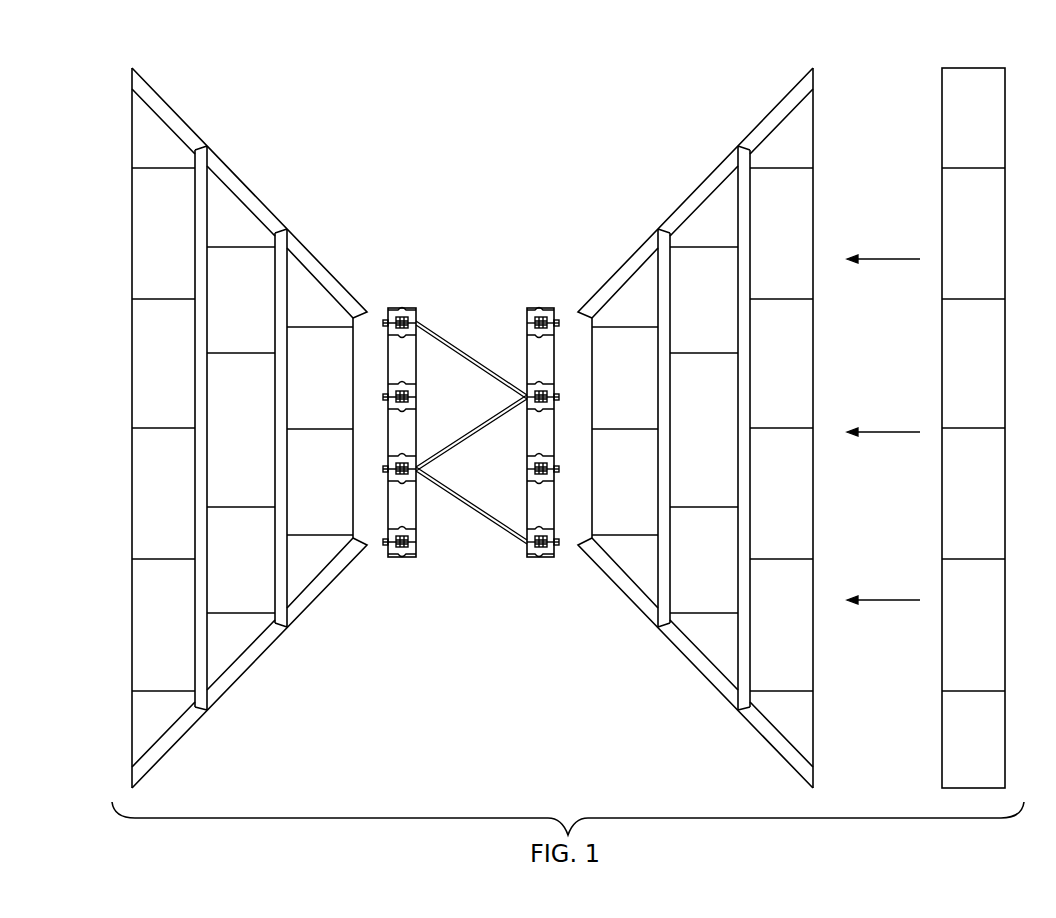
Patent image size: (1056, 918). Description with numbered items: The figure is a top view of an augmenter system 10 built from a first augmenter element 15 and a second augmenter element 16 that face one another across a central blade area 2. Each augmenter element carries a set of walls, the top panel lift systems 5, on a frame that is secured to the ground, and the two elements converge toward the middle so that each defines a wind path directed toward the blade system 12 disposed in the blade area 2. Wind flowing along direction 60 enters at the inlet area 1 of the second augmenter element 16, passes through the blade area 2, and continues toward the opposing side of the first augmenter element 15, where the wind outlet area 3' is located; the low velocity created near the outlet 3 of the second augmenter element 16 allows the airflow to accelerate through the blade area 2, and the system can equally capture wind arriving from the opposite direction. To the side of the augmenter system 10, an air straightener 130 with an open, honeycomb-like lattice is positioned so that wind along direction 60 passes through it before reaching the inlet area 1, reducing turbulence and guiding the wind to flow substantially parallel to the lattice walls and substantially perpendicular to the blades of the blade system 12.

The inlet area 1 is at (132, 376).
The blade area 2 is at (529, 576).
The outlet area 3 is at (558, 470).
The wind outlet area 3' is at (386, 416).
The top panel lift systems 5 is at (294, 180).
The augmenter system 10 is at (684, 78).
The blade system 12 is at (470, 275).
The first augmenter element 15 is at (268, 706).
The second augmenter element 16 is at (672, 688).
The wind flow direction 60 is at (875, 260).
The air straightener 130 is at (975, 68).